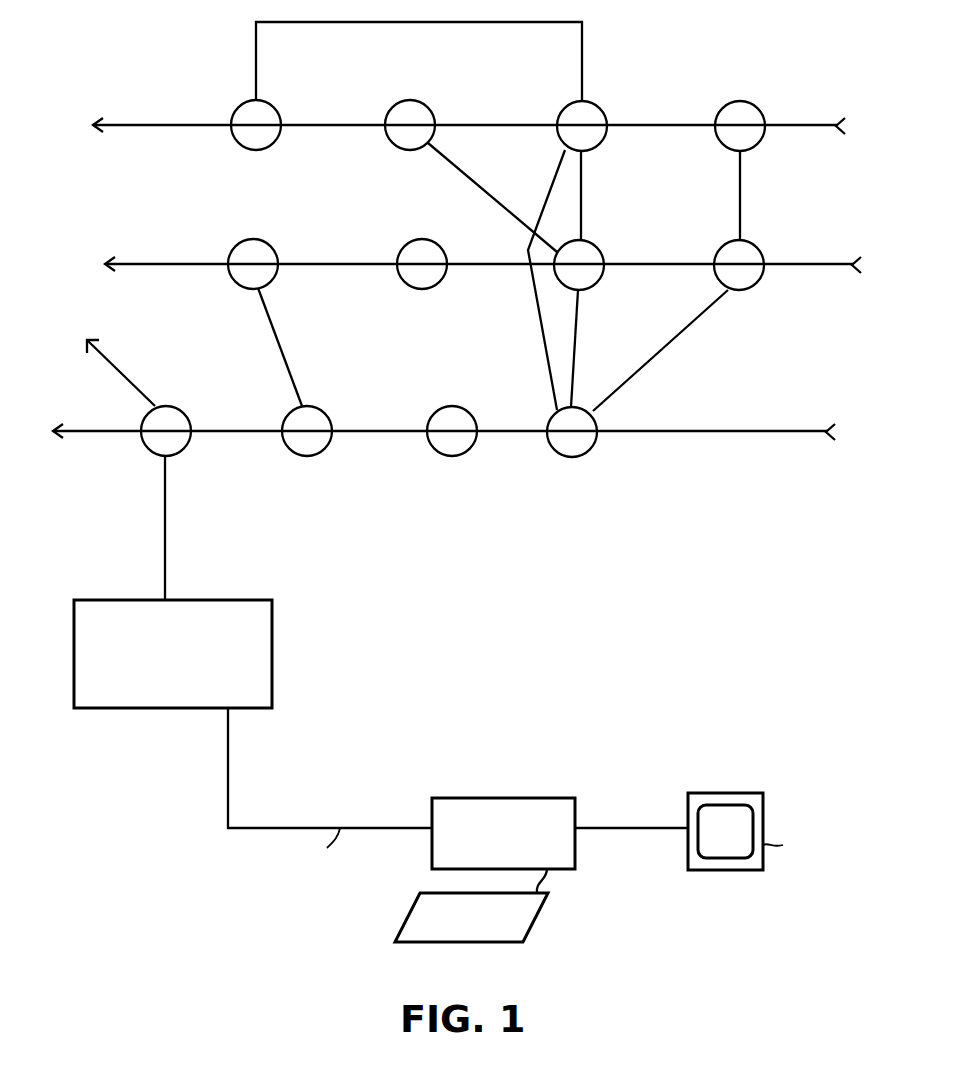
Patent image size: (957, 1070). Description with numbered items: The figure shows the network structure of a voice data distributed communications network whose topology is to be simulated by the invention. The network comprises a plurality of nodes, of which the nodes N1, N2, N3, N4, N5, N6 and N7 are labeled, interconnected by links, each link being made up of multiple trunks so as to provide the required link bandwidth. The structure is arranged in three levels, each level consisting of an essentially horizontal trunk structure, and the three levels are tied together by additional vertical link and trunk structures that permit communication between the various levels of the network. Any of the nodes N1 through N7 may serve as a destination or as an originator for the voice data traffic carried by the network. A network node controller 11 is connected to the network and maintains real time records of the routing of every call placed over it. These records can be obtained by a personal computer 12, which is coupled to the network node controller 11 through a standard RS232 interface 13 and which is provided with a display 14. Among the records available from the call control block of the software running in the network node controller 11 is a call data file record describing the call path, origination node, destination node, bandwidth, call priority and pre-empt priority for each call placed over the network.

The network node controller 11 is at (170, 698).
The personal computer 12 is at (532, 798).
The RS232 interface 13 is at (363, 828).
The display 14 is at (765, 800).
The node N1 is at (572, 447).
The node N2 is at (585, 280).
The node N3 is at (597, 135).
The node N4 is at (410, 139).
The node N5 is at (256, 139).
The node N6 is at (265, 274).
The node N7 is at (422, 279).